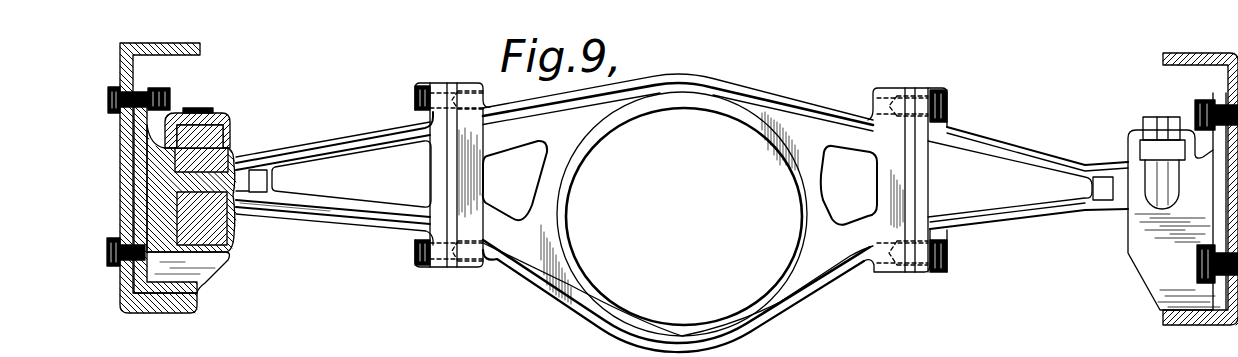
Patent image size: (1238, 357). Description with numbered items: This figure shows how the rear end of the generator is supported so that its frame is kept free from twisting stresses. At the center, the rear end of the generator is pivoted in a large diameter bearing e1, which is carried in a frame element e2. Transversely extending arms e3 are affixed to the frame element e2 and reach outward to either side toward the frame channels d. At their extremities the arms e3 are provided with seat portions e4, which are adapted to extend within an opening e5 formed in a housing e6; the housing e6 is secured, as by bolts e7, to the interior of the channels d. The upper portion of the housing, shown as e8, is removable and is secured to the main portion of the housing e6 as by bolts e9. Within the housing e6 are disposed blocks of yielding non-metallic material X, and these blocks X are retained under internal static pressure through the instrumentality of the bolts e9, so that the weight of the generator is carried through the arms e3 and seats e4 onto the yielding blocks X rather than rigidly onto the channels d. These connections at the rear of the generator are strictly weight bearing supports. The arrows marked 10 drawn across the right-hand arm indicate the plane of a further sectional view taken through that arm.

The channels d is at (183, 44).
The large diameter bearing e1 is at (737, 124).
The frame element e2 is at (780, 122).
The transversely extending arms e3 is at (374, 184).
The seat portions e4 is at (232, 140).
The opening e5 is at (265, 199).
The housing e6 is at (225, 252).
The bolts e7 is at (166, 92).
The upper portion of the housing e8 is at (215, 117).
The bolts e9 is at (1160, 118).
The blocks of yielding non-metallic material X is at (234, 238).
The section line 10- 10 is at (987, 98).